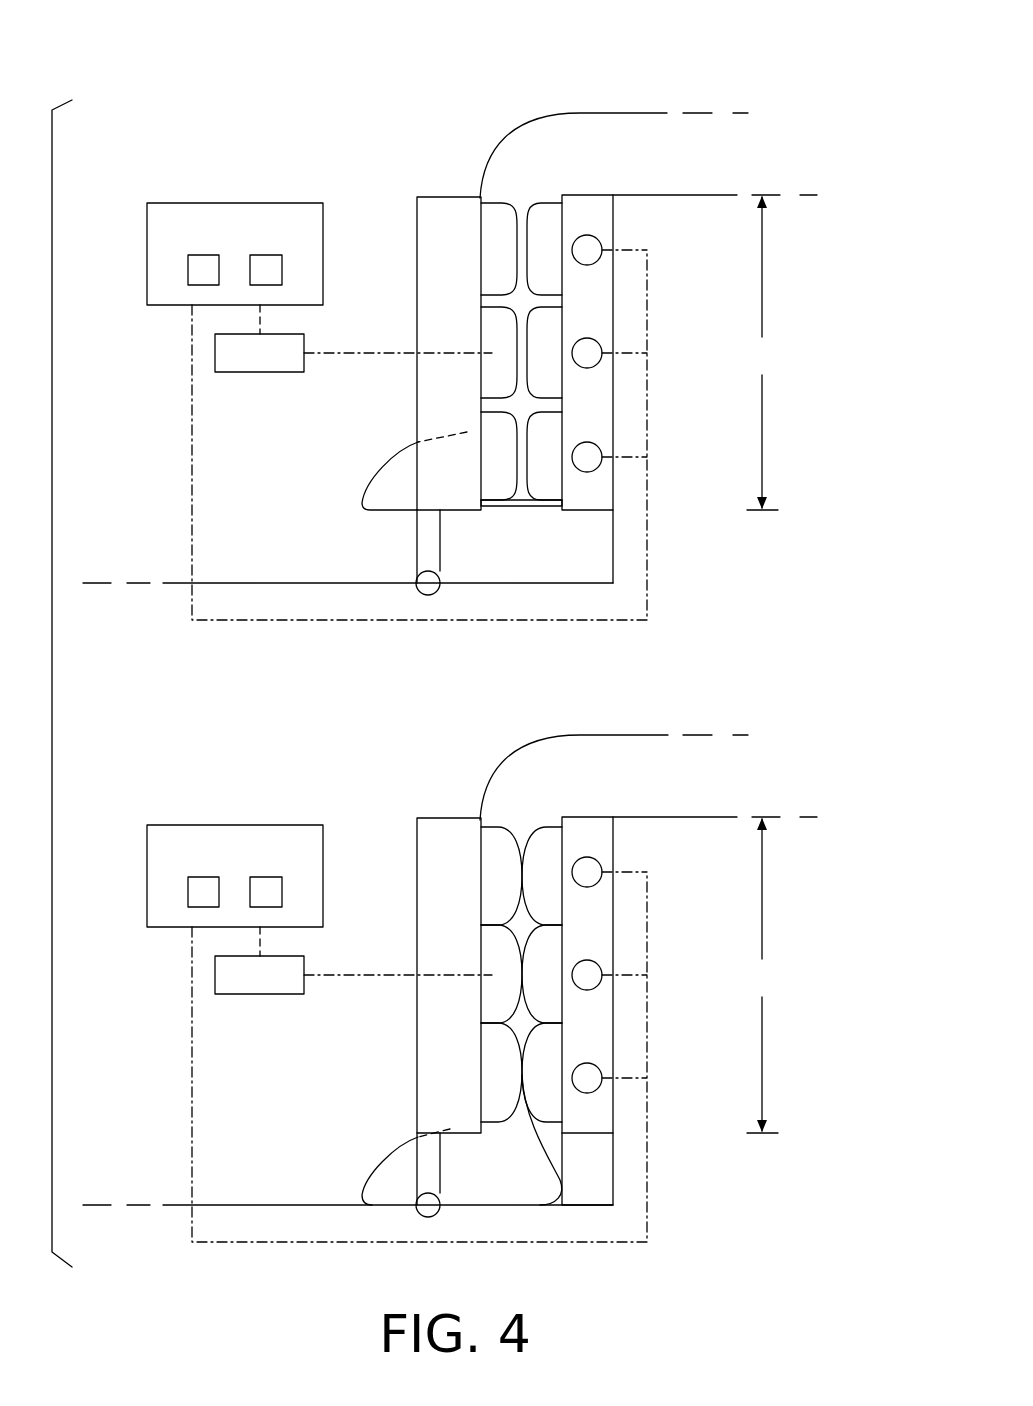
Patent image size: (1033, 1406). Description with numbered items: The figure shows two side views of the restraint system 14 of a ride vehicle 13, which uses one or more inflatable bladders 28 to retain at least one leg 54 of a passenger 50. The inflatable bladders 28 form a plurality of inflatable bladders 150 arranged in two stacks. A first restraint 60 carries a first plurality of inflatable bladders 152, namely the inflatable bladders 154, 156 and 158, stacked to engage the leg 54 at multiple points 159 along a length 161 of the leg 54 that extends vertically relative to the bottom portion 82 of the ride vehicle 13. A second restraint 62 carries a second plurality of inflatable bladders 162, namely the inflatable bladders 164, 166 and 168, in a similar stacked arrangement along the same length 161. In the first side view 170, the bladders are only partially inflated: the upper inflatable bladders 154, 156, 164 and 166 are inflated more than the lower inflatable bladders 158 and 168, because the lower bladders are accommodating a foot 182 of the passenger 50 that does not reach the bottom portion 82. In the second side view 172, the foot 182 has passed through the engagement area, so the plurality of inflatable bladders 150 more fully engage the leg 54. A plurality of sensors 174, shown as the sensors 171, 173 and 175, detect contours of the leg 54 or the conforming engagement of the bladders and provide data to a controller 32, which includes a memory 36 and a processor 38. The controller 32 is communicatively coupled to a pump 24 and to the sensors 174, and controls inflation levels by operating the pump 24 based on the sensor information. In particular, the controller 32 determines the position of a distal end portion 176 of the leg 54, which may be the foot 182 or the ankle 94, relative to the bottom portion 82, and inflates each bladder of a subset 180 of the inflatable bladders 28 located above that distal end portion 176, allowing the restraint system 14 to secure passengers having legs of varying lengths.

The ride vehicle 13 is at (175, 515).
The restraint system 14 is at (383, 112).
The pump 24 is at (215, 352).
The inflatable bladders 28 is at (498, 118).
The controller 32 is at (235, 203).
The memory 36 is at (282, 268).
The processor 38 is at (188, 268).
The passenger 50 is at (645, 137).
The leg 54 is at (520, 490).
The first restraint 60 is at (428, 398).
The second restraint 62 is at (600, 215).
The bottom portion 82 is at (522, 598).
The ankle 94 is at (522, 410).
The plurality of inflatable bladders 150 is at (475, 188).
The first plurality of inflatable bladders 152 is at (500, 197).
The inflatable bladder 154 is at (490, 240).
The inflatable bladder 156 is at (488, 330).
The inflatable bladder 158 is at (487, 443).
The multiple points 159 is at (520, 220).
The length 161 is at (762, 664).
The second plurality of inflatable bladders 162 is at (547, 195).
The inflatable bladder 164 is at (543, 228).
The inflatable bladder 166 is at (547, 378).
The inflatable bladder 168 is at (548, 482).
The first side view 170 is at (160, 470).
The sensor 171 is at (598, 260).
The second side view 172 is at (162, 1092).
The sensor 173 is at (598, 364).
The plurality of sensors 174 is at (712, 440).
The sensor 175 is at (598, 467).
The distal end portion 176 is at (538, 513).
The subset 180 is at (618, 305).
The foot 182 is at (392, 483).